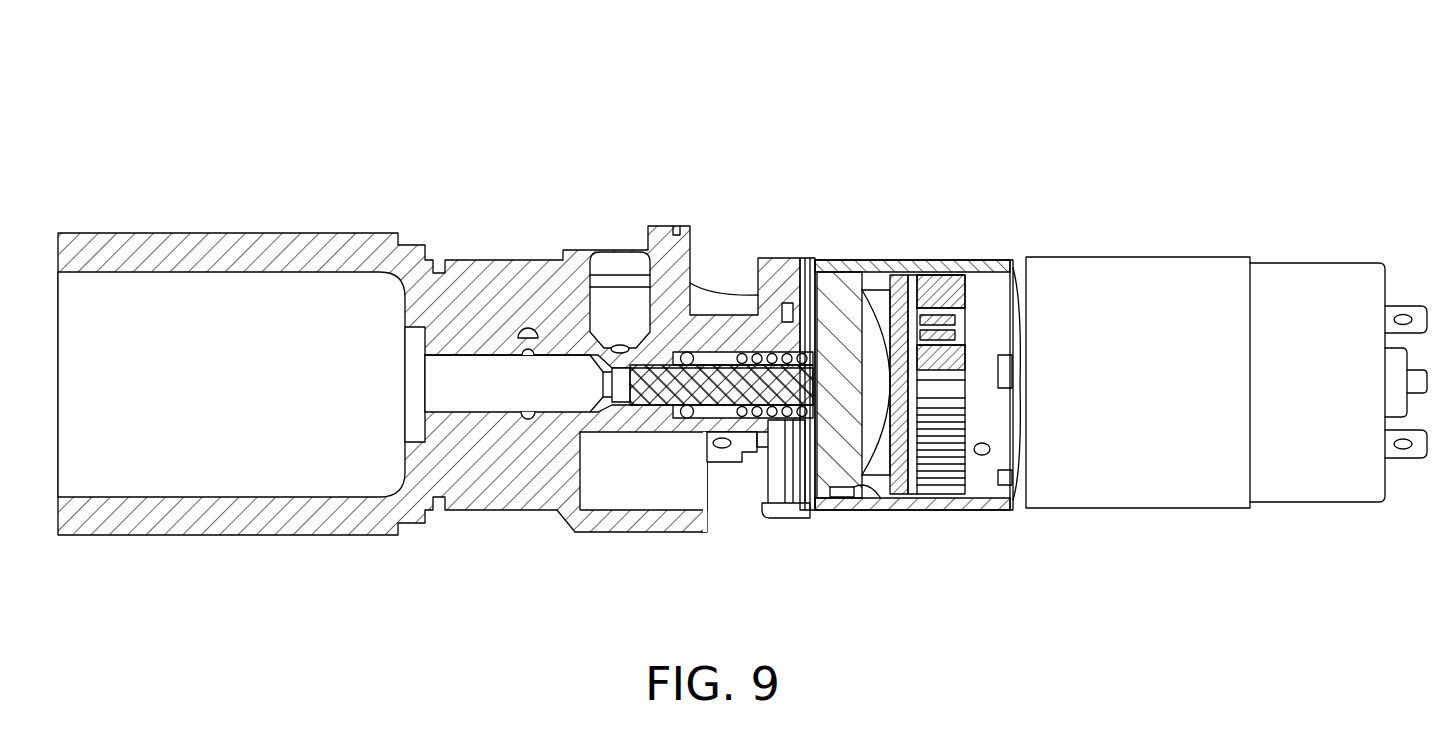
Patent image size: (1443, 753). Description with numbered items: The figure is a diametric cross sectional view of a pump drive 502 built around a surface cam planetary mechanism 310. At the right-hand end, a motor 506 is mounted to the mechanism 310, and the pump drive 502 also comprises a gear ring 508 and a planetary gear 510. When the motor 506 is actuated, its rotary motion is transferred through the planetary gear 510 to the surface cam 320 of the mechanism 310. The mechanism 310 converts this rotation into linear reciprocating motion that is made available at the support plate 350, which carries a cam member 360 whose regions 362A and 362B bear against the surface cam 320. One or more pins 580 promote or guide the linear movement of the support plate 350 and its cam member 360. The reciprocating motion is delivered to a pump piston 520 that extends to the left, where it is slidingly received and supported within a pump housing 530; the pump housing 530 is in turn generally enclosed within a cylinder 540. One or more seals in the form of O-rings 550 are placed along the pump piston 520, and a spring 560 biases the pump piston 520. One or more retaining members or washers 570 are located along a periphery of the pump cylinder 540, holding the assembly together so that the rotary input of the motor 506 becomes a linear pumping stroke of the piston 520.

The pump drive 502 is at (182, 120).
The cylinder 540 is at (518, 287).
The pump piston 520 is at (670, 352).
The pump housing 530 is at (693, 410).
The O-rings 550 is at (685, 412).
The spring 560 is at (783, 420).
The pins 580 is at (823, 513).
The retaining members or washers 570 is at (810, 262).
The surface cam planetary mechanism 310 is at (834, 195).
The support plate 350 is at (833, 327).
The cam member 360 is at (839, 385).
The region of cam member 362A is at (897, 335).
The region of cam member 362B is at (900, 472).
The surface cam 320 is at (912, 307).
The planetary gear 510 is at (933, 478).
The gear ring 508 is at (988, 507).
The motor 506 is at (1192, 277).